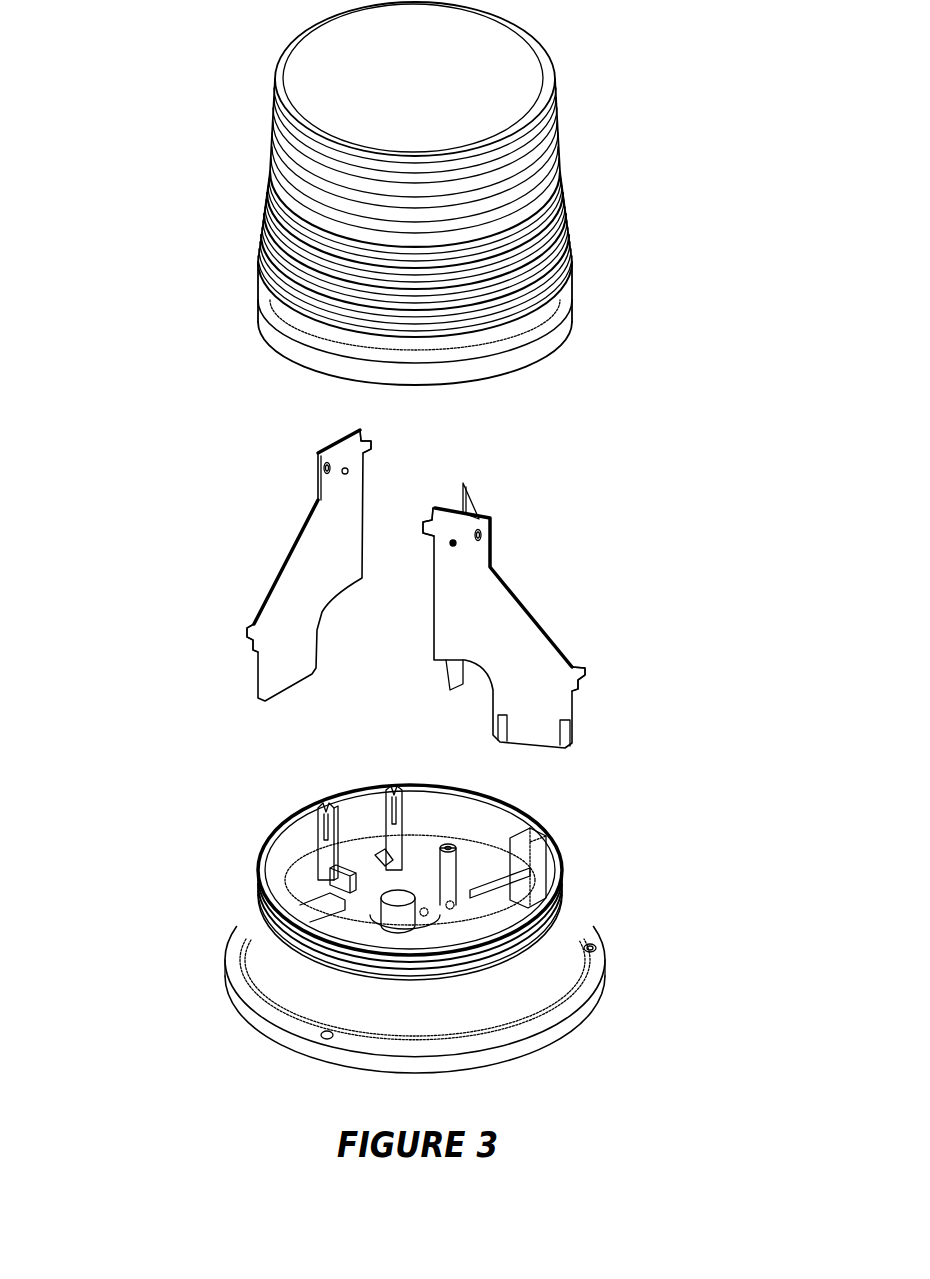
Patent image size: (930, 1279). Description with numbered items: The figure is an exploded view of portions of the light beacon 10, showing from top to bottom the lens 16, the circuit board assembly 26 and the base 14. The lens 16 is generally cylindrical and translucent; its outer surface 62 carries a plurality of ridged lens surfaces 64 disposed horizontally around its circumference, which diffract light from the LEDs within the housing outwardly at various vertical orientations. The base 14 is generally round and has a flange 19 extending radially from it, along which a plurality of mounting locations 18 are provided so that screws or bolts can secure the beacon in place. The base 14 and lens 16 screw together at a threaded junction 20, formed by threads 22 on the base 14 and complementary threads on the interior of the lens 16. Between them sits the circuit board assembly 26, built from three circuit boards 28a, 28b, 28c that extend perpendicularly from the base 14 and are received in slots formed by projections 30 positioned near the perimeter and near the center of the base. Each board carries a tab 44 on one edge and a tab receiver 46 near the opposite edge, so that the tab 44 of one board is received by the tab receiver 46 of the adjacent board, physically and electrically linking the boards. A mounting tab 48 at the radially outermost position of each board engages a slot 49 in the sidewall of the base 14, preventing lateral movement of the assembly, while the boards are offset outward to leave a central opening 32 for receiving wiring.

The light beacon 10 is at (160, 1077).
The base 14 is at (577, 920).
The lens 16 is at (203, 264).
The mounting locations 18 is at (598, 946).
The flange 19 is at (525, 1042).
The threaded junction 20 is at (228, 880).
The threads 22 is at (563, 863).
The circuit board assembly 26 is at (228, 738).
The circuit board 28a is at (558, 640).
The circuit board 28b is at (470, 493).
The circuit board 28c is at (295, 553).
The projections 30 is at (400, 875).
The opening 32 is at (425, 897).
The tab 44 is at (372, 440).
The tab receiver 46 is at (322, 455).
The mounting tab 48 is at (250, 632).
The slot 49 is at (318, 810).
The outer surface 62 is at (517, 48).
The ridged lens surfaces 64 is at (562, 222).